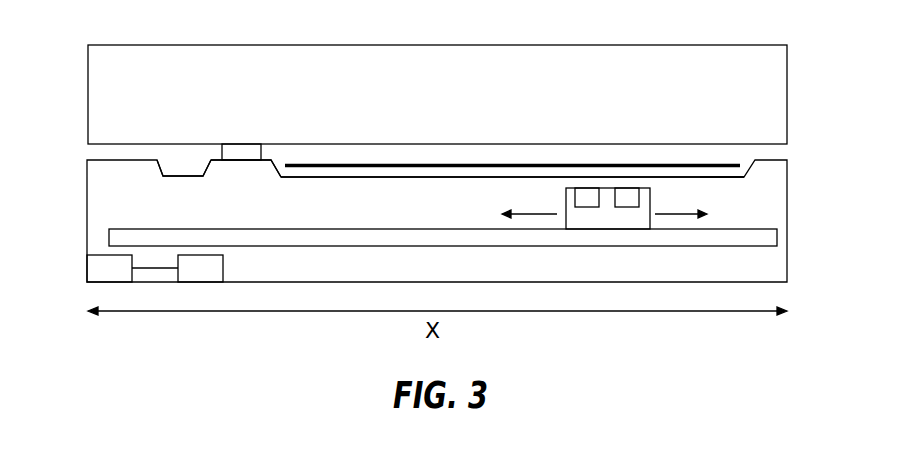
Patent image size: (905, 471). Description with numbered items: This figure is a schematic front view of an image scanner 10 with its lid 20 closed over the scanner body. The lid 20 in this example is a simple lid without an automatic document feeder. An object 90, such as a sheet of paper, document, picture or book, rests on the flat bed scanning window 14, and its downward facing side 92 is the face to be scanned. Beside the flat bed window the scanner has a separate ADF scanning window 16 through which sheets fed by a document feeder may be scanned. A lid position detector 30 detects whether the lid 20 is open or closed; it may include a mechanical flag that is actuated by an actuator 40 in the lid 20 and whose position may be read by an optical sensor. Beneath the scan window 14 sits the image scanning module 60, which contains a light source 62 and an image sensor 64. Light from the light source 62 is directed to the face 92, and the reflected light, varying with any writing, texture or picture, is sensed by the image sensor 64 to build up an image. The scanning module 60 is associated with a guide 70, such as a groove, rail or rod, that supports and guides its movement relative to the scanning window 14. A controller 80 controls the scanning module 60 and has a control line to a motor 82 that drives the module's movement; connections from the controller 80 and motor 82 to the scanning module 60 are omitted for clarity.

The lower substrate body 10 is at (60, 198).
The scanning window 14 is at (398, 178).
The ADF scanning window 16 is at (178, 170).
The lid 20 is at (62, 59).
The lid position detector 30 is at (240, 170).
The actuator 40 is at (247, 150).
The image scanning module 60 is at (608, 217).
The light source 62 is at (582, 198).
The image sensor 64 is at (632, 198).
The guide 70 is at (772, 238).
The controller 80 is at (177, 268).
The motor 82 is at (109, 268).
The object 90 is at (728, 164).
The downward facing side 92 is at (725, 178).